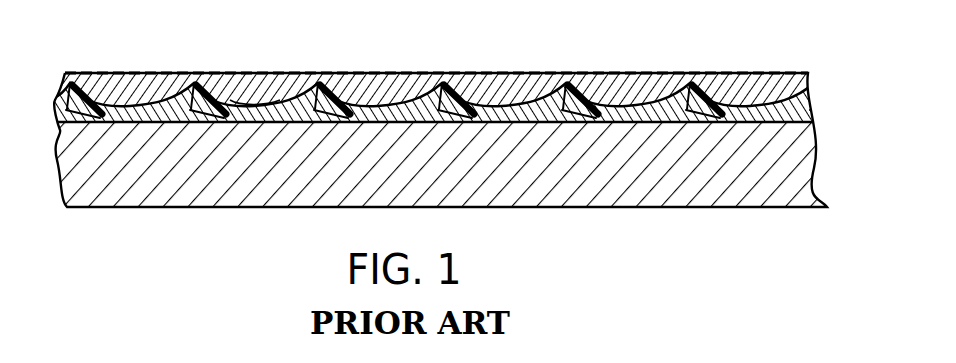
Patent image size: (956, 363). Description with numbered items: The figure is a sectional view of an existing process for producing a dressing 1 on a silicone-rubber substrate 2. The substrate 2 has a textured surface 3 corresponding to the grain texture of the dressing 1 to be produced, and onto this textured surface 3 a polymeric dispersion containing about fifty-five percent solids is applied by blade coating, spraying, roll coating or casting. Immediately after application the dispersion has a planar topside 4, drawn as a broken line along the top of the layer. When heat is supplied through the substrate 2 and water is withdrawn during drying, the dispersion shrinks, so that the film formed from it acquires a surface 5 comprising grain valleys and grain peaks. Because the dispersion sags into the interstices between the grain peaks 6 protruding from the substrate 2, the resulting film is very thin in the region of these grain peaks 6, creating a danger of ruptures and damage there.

The dressing 1 is at (808, 92).
The silicone-rubber substrate 2 is at (757, 165).
The textured surface 3 is at (520, 112).
The planar topside 4 is at (148, 72).
The surface 5 is at (253, 102).
The grain peaks 6 is at (440, 82).